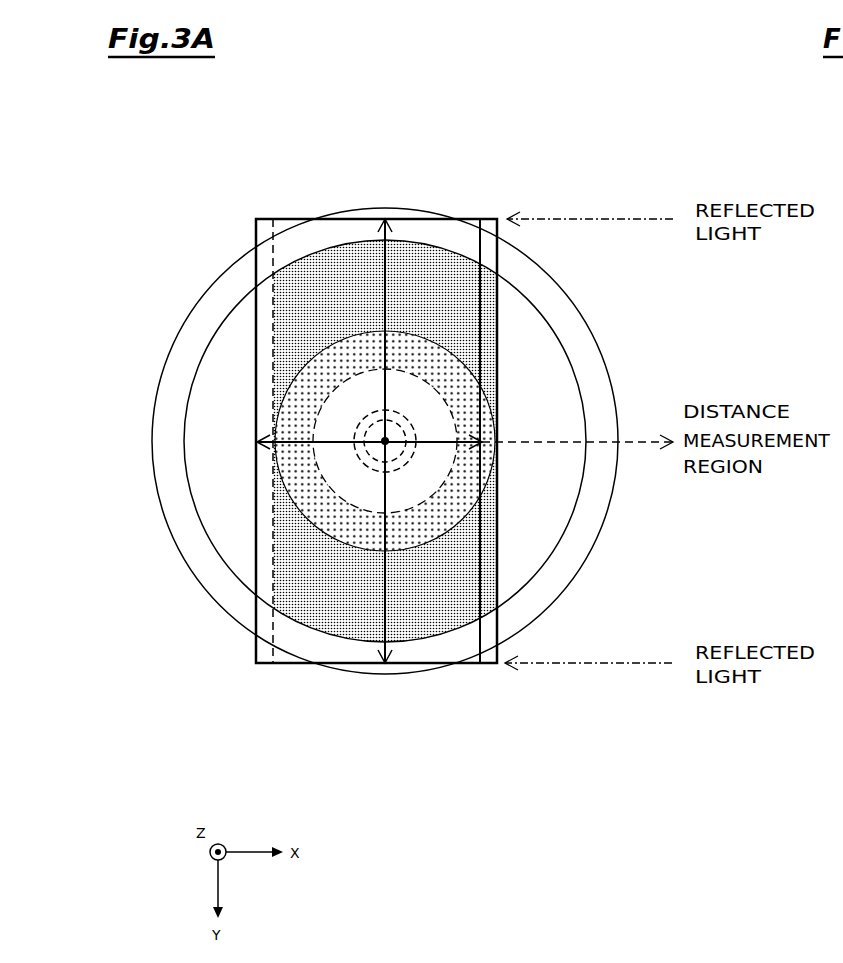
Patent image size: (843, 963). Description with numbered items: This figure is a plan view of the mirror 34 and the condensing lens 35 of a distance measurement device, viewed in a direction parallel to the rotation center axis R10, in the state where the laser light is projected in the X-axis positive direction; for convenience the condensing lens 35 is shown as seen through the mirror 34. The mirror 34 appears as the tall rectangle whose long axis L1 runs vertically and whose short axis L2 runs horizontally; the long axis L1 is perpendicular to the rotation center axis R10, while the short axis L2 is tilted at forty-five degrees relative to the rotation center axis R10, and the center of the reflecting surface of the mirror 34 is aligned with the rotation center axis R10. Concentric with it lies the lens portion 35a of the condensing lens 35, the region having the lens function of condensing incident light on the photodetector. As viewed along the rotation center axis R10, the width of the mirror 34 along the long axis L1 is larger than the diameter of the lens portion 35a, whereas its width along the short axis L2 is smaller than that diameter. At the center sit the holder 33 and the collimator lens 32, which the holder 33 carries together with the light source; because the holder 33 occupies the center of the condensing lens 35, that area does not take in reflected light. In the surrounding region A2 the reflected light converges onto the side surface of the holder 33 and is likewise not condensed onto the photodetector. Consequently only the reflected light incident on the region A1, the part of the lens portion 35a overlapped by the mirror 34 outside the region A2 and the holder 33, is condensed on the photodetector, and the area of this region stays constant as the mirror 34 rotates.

The collimator lens 32 is at (410, 420).
The holder 33 is at (498, 511).
The mirror 34 is at (486, 218).
The condensing lens 35 is at (229, 275).
The lens portion 35a is at (545, 398).
The region A1 is at (305, 270).
The region A2 is at (297, 402).
The long axis L1 is at (387, 282).
The short axis L2 is at (345, 442).
The rotation center axis R10 is at (385, 441).